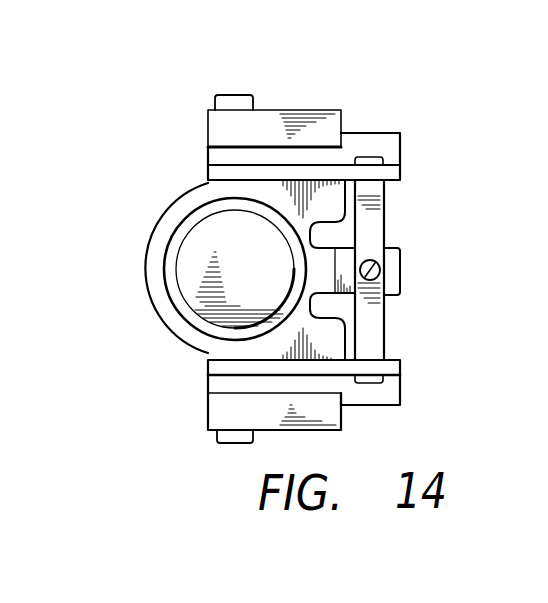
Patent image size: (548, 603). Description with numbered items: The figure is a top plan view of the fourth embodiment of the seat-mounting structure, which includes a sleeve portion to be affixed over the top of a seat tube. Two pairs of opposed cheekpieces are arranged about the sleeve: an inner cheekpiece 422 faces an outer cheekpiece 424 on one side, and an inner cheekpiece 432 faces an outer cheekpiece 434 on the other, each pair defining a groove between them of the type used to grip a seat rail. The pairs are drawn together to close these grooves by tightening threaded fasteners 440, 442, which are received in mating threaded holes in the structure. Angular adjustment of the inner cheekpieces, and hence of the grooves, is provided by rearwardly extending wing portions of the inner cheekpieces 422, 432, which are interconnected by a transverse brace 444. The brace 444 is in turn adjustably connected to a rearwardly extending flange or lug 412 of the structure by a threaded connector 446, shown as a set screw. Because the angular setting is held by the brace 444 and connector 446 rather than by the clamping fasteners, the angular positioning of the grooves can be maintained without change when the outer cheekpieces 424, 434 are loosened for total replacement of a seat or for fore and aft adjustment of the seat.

The rearwardly extending flange or lug 412 is at (400, 268).
The inner cheekpiece 422 is at (208, 383).
The outer cheekpiece 424 is at (208, 155).
The inner cheekpiece 432 is at (208, 415).
The outer cheekpiece 434 is at (208, 127).
The threaded fastener 440 is at (232, 443).
The threaded fastener 442 is at (230, 95).
The transverse brace 444 is at (385, 205).
The threaded connector 446 is at (375, 279).